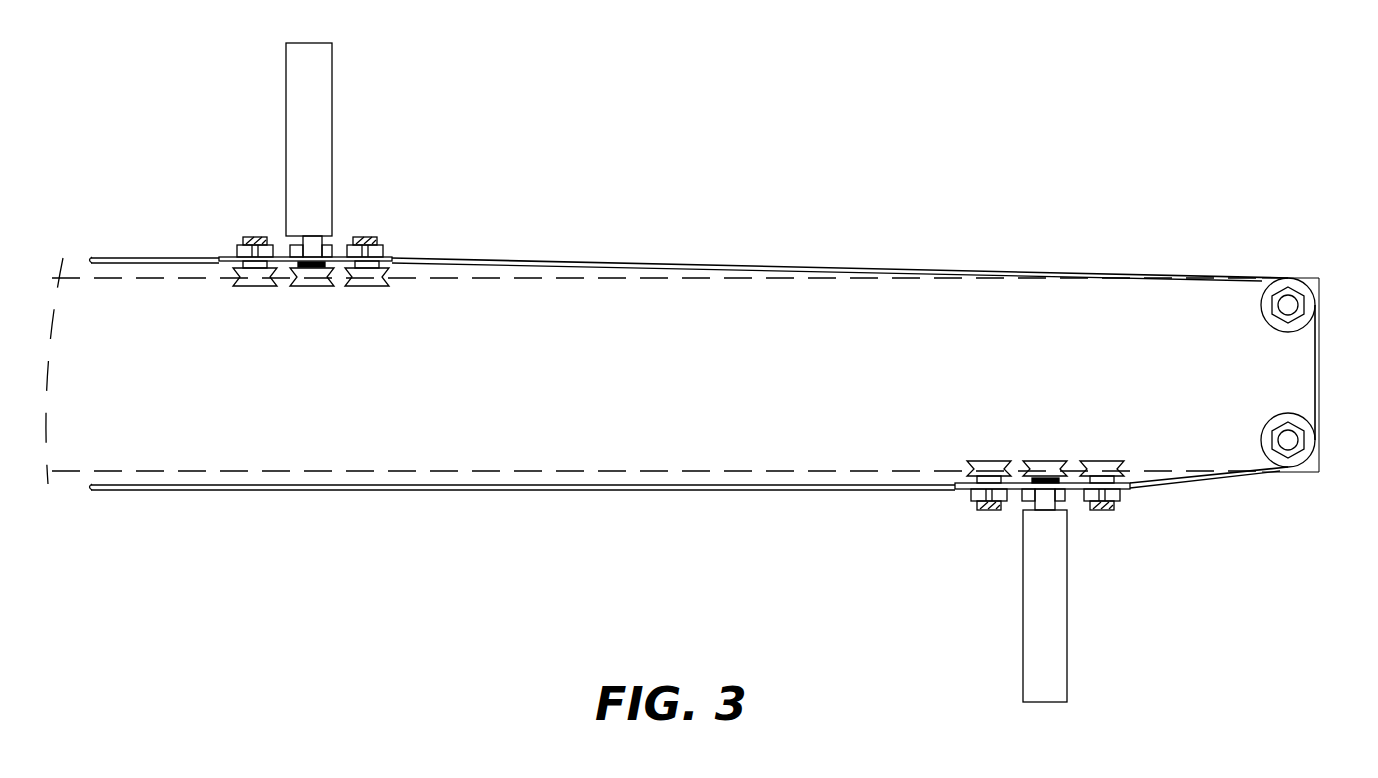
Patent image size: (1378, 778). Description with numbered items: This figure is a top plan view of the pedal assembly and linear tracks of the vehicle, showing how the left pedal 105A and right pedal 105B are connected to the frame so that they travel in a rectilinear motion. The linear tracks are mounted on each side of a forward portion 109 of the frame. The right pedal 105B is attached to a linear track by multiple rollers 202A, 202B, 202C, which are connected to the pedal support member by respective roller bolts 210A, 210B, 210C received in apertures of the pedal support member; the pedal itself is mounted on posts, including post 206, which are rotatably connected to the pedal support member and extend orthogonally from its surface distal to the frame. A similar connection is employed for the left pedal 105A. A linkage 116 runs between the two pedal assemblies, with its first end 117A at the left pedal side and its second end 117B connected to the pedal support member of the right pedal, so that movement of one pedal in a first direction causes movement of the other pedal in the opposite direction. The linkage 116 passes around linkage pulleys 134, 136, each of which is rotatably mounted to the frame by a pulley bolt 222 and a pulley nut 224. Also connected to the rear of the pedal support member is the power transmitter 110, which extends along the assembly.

The left pedal 105A is at (333, 104).
The right pedal 105B is at (1037, 703).
The linkage 116 is at (548, 258).
The first end of the linkage 117A is at (398, 262).
The second end of the linkage 117B is at (1130, 490).
The pulley bolt 222 is at (1298, 292).
The pulley nut 224 is at (1312, 305).
The linkage pulley 134 is at (1312, 318).
The linkage pulley 136 is at (1316, 450).
The roller 202A is at (1100, 460).
The roller 202B is at (1045, 460).
The roller 202C is at (985, 460).
The roller bolt 210A is at (1110, 500).
The roller bolt 210B is at (1025, 510).
The roller bolt 210C is at (975, 497).
The post 206 is at (1046, 503).
The power transmitter 110 is at (277, 492).
The forward portion of the frame 109 is at (490, 473).